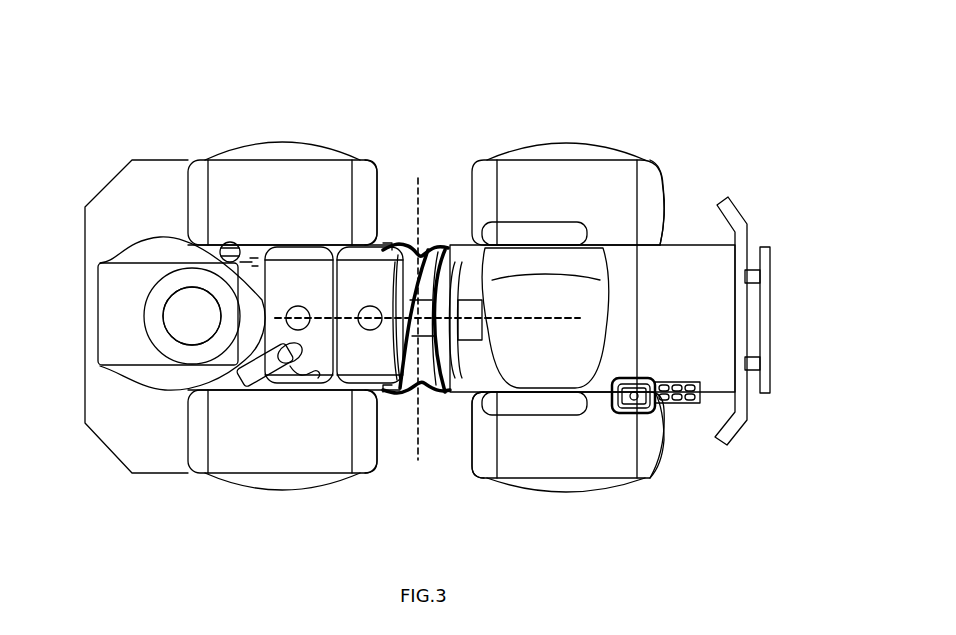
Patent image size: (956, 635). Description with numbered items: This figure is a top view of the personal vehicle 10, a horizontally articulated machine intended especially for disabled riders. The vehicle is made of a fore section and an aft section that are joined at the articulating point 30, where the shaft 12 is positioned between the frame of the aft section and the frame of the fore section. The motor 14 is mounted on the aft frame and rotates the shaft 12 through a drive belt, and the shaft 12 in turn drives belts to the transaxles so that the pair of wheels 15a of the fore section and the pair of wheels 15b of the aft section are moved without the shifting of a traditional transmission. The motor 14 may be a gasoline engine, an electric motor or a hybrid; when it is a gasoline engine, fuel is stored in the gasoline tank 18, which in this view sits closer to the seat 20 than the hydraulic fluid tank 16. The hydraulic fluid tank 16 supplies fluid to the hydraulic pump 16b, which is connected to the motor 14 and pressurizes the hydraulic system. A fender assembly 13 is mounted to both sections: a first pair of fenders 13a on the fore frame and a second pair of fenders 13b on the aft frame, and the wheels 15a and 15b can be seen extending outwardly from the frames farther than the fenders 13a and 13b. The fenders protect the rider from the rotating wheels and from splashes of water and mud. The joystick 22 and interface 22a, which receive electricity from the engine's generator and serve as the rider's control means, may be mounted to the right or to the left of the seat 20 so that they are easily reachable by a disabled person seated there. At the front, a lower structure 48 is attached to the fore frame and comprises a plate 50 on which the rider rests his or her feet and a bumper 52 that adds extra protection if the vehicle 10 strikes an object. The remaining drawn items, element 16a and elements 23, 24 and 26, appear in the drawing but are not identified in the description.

The personal vehicle 10 is at (669, 70).
The shaft 12 is at (444, 320).
The fender assembly 13 is at (480, 468).
The first pair of fenders 13a is at (655, 170).
The second pair of fenders 13b is at (377, 165).
The motor 14 is at (110, 292).
The pair of wheels 15a is at (572, 143).
The pair of wheels 15b is at (284, 142).
The hydraulic fluid tank 16 is at (297, 248).
The exhaust pipe 16a is at (248, 380).
The hydraulic pump 16b is at (178, 332).
The gasoline tank 18 is at (362, 248).
The seat 20 is at (566, 293).
The joystick 22 is at (640, 378).
The interface 22a is at (690, 382).
The hydraulic pump 23 is at (390, 222).
The steering cylinder 24 is at (410, 246).
The frame section 26 is at (135, 186).
The articulating point 30 is at (430, 378).
The lower structure 48 is at (690, 258).
The plate 50 is at (717, 300).
The bumper 52 is at (770, 262).